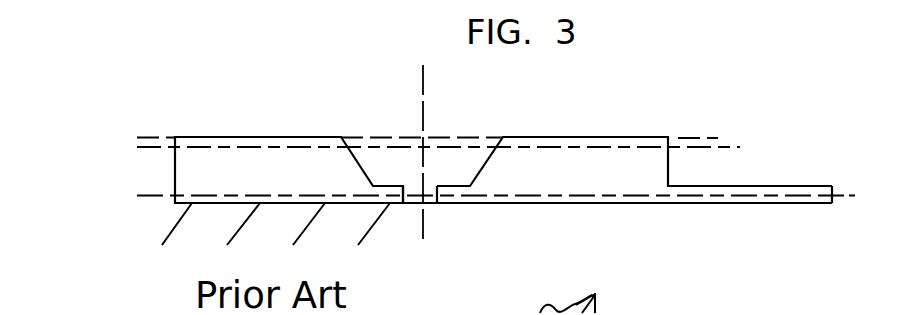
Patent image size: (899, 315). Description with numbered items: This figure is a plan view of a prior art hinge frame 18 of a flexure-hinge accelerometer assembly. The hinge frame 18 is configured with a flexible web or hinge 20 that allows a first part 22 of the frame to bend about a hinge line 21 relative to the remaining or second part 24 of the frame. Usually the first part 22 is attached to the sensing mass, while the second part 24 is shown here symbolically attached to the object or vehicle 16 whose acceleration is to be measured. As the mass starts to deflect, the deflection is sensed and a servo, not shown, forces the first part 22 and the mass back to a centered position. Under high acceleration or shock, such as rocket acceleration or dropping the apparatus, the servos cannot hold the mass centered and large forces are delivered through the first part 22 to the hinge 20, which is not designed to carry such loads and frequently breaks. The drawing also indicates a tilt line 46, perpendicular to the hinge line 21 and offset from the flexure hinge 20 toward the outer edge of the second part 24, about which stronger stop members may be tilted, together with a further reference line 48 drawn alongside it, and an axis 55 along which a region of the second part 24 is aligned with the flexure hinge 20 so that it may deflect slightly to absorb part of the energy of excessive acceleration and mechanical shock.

The object 16 is at (172, 232).
The hinge frame 18 is at (579, 137).
The flexible web or hinge 20 is at (428, 205).
The hinge line 21 is at (423, 95).
The first part 22 is at (592, 205).
The second part 24 is at (247, 163).
The tilt line 46 is at (689, 140).
The center reference plane 48 is at (733, 144).
The axes 55 is at (843, 197).